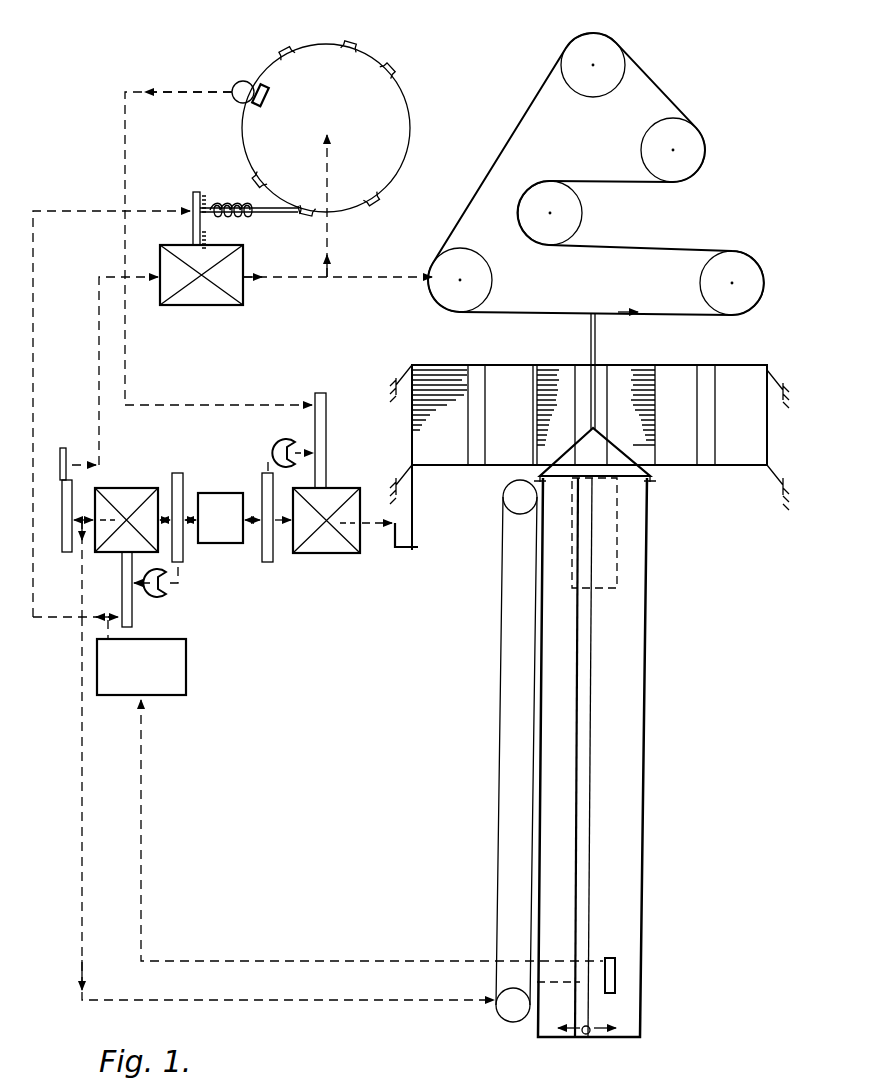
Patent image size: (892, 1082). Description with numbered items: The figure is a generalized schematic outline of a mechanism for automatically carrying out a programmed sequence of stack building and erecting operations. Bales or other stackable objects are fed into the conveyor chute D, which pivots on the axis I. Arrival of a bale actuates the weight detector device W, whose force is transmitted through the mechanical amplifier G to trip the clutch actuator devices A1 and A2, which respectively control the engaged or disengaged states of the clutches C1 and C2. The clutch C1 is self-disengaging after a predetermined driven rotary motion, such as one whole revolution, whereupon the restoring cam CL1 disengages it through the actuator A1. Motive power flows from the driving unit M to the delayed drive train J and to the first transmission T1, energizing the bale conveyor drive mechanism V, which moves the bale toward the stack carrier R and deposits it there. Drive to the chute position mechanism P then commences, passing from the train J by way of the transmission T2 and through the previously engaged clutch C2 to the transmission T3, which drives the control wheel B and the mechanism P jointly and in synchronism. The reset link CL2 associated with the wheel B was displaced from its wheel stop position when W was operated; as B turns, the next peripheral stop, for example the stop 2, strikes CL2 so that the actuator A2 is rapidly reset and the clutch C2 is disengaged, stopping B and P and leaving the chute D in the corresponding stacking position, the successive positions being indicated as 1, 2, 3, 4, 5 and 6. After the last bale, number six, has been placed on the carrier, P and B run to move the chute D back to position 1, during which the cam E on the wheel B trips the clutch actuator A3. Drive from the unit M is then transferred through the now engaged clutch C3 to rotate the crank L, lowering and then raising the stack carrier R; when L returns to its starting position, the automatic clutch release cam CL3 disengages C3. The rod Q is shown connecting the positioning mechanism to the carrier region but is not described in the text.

The control wheel B is at (378, 66).
The cam E is at (252, 84).
The clutch actuator device A2 is at (192, 202).
The reset link CL2 is at (250, 204).
The clutch C2 is at (212, 302).
The transmission T3 is at (282, 280).
The transmission T2 is at (99, 400).
The chute position mechanism P is at (596, 172).
The stacking position No. 1 is at (460, 282).
The stop #2 / stack position No. 2 is at (598, 313).
The stacking position No. 3 is at (732, 284).
The stacking position No. 4 is at (550, 206).
The stacking position No. 5 is at (673, 150).
The last bale position No. 6 is at (593, 56).
The suspension rod Q is at (590, 352).
The stack carrier R is at (432, 365).
The conveyor chute D is at (647, 755).
The bale conveyor drive mechanism V is at (537, 982).
The weight detector device W is at (617, 975).
The axis I is at (583, 1033).
The delayed drive train J is at (60, 470).
The clutch C1 is at (125, 490).
The driving unit M is at (220, 518).
The clutch C3 is at (322, 556).
The clutch actuator A3 is at (326, 425).
The automatic clutch release cam CL3 is at (273, 452).
The clutch actuator device A1 is at (122, 600).
The restoring cam CL1 is at (178, 591).
The crank L is at (401, 548).
The mechanical amplifier G is at (141, 667).
The first transmission T1 is at (80, 800).